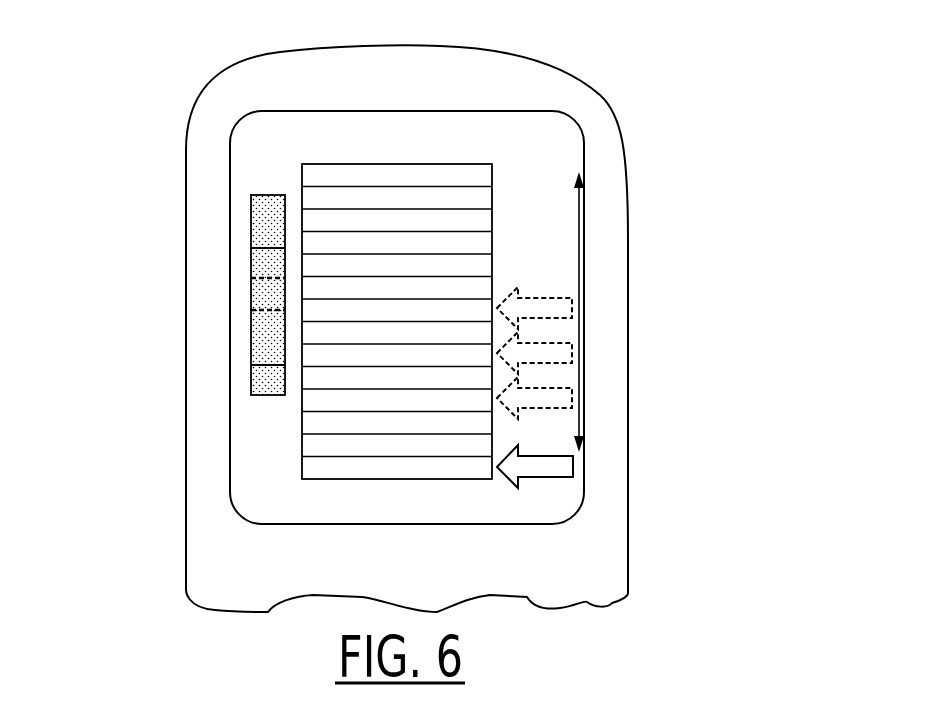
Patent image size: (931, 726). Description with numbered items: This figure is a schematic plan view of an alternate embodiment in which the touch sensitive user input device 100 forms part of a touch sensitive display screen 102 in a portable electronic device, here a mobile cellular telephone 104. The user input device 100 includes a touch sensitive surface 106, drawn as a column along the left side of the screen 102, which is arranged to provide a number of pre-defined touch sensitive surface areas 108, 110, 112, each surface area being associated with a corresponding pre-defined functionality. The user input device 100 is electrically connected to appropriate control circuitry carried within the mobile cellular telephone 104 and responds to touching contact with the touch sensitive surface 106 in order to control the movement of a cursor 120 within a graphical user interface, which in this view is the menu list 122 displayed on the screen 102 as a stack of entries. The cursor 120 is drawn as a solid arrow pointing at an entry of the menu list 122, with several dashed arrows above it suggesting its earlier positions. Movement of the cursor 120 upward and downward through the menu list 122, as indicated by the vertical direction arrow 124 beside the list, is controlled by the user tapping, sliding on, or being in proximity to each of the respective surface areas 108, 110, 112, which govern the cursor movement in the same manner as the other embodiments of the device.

The user input device 100 is at (216, 215).
The touch sensitive display screen 102 is at (507, 140).
The mobile cellular telephone 104 is at (735, 217).
The touch sensitive surface 106 is at (257, 202).
The touch sensitive surface area 108 is at (268, 238).
The touch sensitive surface area 110 is at (268, 294).
The touch sensitive surface area 112 is at (268, 352).
The cursor 120 is at (563, 469).
The menu list 122 is at (352, 150).
The direction arrow 124 is at (579, 270).